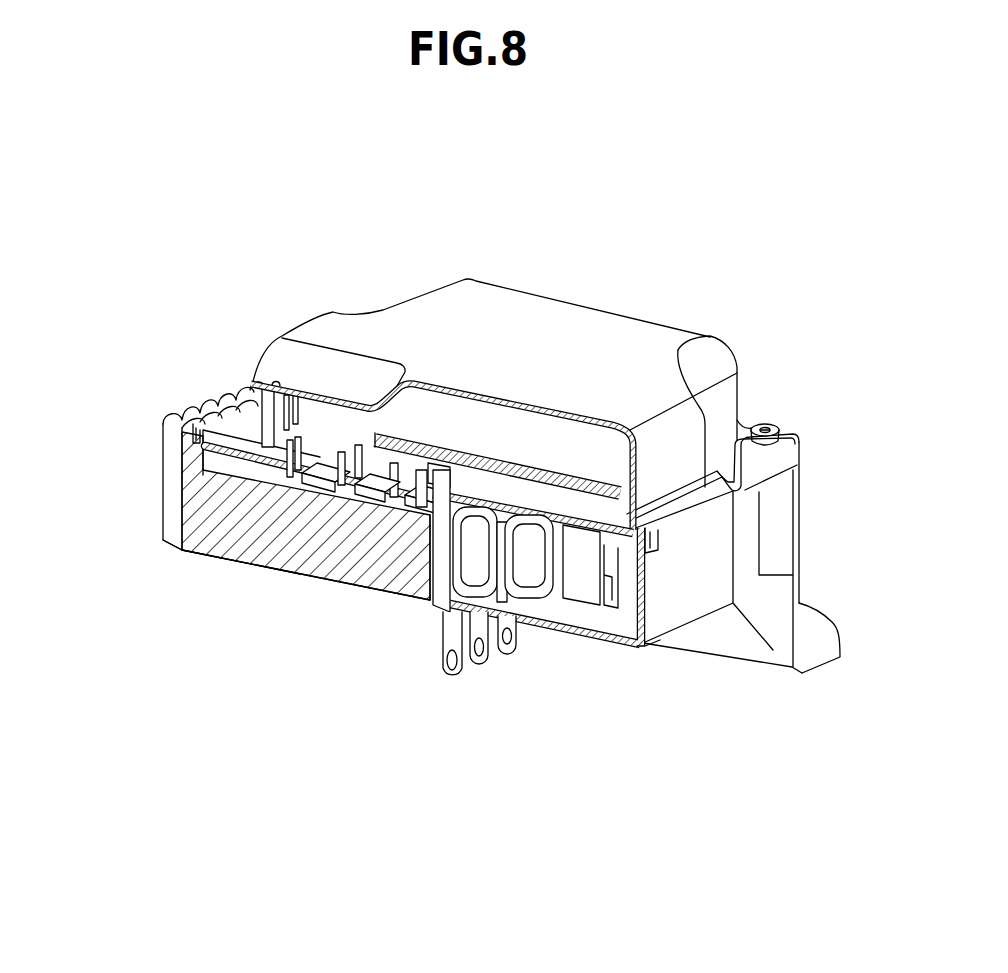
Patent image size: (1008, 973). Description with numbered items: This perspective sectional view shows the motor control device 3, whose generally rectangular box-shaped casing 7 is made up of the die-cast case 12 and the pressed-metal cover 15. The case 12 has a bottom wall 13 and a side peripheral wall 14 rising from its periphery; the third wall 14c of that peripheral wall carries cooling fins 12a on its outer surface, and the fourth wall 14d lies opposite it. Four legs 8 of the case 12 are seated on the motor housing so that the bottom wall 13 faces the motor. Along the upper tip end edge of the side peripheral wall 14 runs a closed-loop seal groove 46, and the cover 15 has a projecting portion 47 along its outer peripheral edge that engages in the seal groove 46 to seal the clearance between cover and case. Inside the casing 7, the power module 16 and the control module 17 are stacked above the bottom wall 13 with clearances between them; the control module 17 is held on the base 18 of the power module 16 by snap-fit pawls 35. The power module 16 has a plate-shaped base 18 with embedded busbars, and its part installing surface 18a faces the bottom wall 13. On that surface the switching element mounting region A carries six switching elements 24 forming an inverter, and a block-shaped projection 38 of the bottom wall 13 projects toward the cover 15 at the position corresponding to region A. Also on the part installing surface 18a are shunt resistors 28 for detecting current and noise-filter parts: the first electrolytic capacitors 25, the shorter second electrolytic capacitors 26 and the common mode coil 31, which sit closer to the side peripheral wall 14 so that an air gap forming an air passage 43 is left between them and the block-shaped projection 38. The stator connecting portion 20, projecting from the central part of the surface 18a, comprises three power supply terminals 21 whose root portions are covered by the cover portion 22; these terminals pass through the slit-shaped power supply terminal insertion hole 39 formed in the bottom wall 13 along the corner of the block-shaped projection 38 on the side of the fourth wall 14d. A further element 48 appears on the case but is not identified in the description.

The motor control device 3 is at (620, 207).
The casing 7 is at (868, 262).
The cover 15 is at (710, 337).
The case 12 is at (793, 500).
The control module 17 is at (438, 448).
The cooling fins 12a is at (175, 418).
The seal groove 46 is at (190, 436).
The projecting portion 47 is at (196, 433).
The third wall 14c is at (180, 468).
The power module 16 is at (243, 470).
The base 18 is at (306, 516).
The switching element mounting region A is at (163, 541).
The part installing surface 18a is at (172, 545).
The block-shaped projection 38 is at (247, 532).
The switching elements 24 is at (277, 507).
The shunt resistors 28 is at (363, 510).
The power supply terminal insertion hole 39 is at (417, 573).
The first electrolytic capacitors 25 is at (234, 434).
The pawls 35 is at (246, 400).
The screw boss 48 is at (768, 424).
The fourth wall 14d is at (690, 588).
The side peripheral wall 14 is at (722, 557).
The legs 8 is at (817, 650).
The bottom wall 13 is at (638, 630).
The air passage 43 is at (645, 643).
The second electrolytic capacitors 26 is at (577, 592).
The common mode coil 31 is at (523, 572).
The stator connecting portion 20 is at (318, 697).
The cover portion 22 is at (455, 578).
The power supply terminals 21 is at (452, 680).